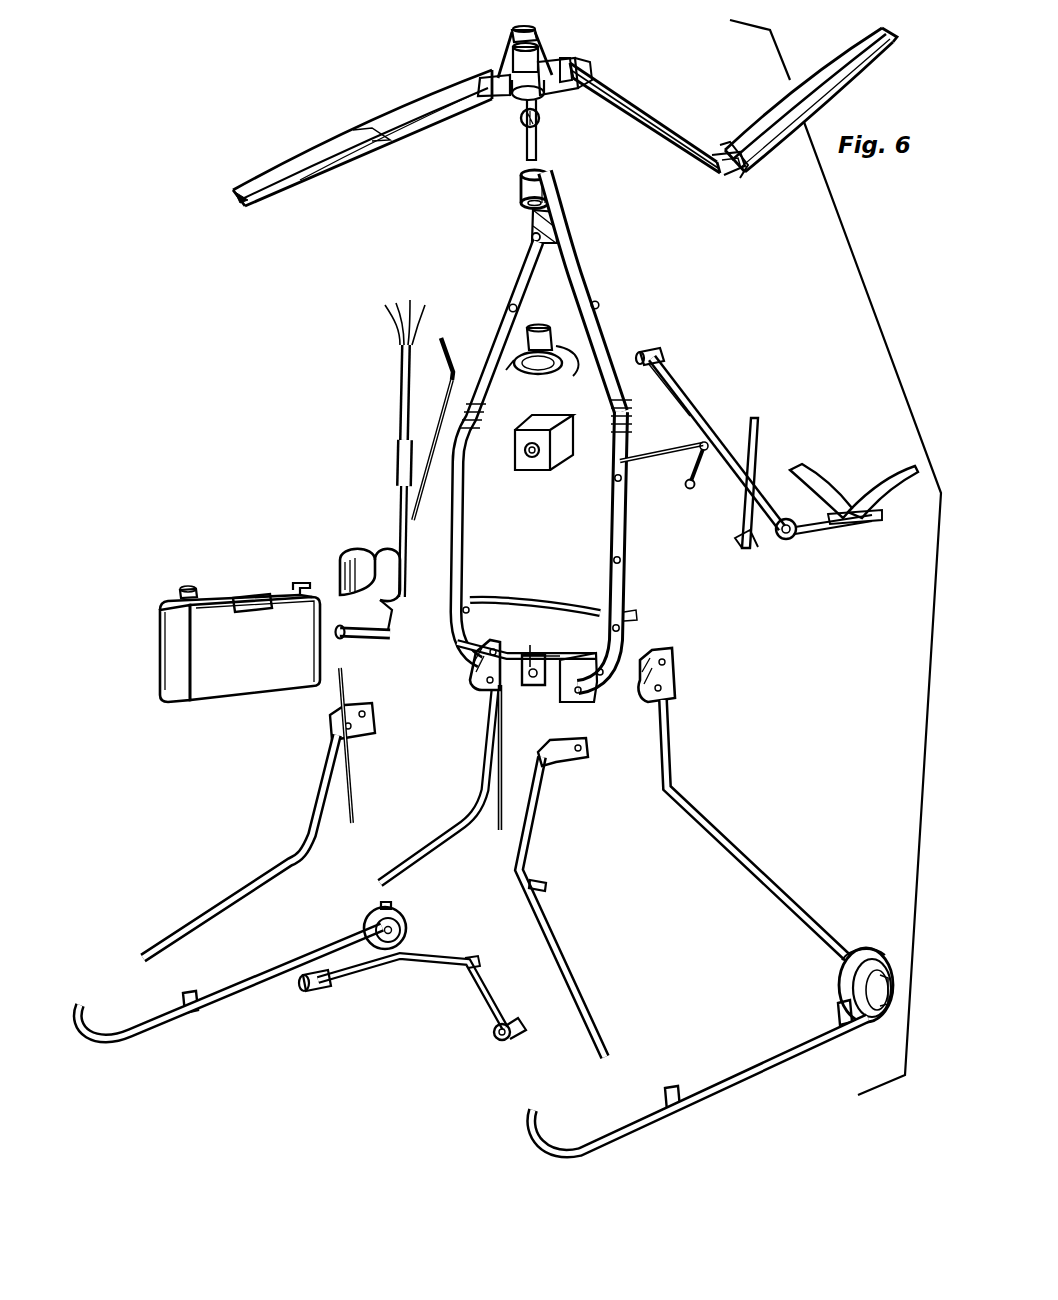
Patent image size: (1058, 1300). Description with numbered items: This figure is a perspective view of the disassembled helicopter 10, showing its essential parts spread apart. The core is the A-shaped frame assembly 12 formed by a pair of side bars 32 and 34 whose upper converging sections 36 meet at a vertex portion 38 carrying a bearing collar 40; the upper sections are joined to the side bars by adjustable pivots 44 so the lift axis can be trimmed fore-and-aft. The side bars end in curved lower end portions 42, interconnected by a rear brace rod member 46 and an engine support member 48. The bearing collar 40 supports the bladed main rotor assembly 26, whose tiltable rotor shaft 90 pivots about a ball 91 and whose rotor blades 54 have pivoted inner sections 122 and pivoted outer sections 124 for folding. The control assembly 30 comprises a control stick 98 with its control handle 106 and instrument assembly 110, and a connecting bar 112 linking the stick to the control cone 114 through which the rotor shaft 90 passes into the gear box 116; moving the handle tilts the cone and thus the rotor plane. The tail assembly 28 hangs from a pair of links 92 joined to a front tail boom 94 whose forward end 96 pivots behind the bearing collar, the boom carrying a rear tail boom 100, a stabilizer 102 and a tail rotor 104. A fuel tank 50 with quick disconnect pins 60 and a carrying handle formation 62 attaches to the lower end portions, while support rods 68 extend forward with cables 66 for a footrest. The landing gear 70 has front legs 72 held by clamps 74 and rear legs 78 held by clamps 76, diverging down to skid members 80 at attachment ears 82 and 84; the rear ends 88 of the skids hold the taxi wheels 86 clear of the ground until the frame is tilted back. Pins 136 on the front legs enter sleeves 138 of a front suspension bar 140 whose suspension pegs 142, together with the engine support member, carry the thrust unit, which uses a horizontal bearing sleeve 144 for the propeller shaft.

The helicopter 10 is at (152, 295).
The frame assembly 12 is at (566, 453).
The bladed main rotor assembly 26 is at (590, 40).
The tail assembly 28 is at (745, 386).
The control assembly 30 is at (376, 448).
The side bar 32 is at (470, 481).
The side bar 34 is at (620, 521).
The upper converging sections 36 is at (586, 266).
The vertex portion 38 is at (556, 190).
The bearing collar 40 is at (520, 192).
The curved lower end portions 42 is at (585, 691).
The adjustable pivots 44 is at (599, 301).
The rear brace rod member 46 is at (508, 606).
The engine support member 48 is at (520, 657).
The fuel tanks 50 is at (240, 651).
The rotor blades 54 is at (355, 128).
The quick disconnect pins 60 is at (257, 621).
The carrying handle formation 62 is at (240, 593).
The cables 66 is at (352, 773).
The support rods 68 is at (388, 659).
The landing gear 70 is at (487, 901).
The front legs 72 is at (258, 871).
The clamps 74 is at (380, 717).
The clamps 76 is at (660, 681).
The rear legs 78 is at (700, 816).
The skid members 80 is at (250, 996).
The attachment ears 82 is at (686, 1094).
The attachment ears 84 is at (836, 1011).
The taxi wheels 86 is at (855, 949).
The rear ends of skid members 88 is at (876, 957).
The rotor shaft 90 is at (525, 150).
The ball 91 is at (539, 121).
The links 92 is at (698, 479).
The front tail boom 94 is at (684, 396).
The forward end of tail boom 96 is at (652, 353).
The control stick 98 is at (401, 401).
The rear tail boom 100 is at (806, 541).
The stabilizer 102 is at (814, 491).
The tail rotor 104 is at (752, 447).
The control handle 106 is at (340, 639).
The instrument assembly 110 is at (362, 566).
The connecting bar 112 is at (442, 343).
The control cone 114 is at (555, 356).
The gear box 116 is at (562, 453).
The inner sections 122 is at (665, 107).
The outer sections 124 is at (822, 75).
The pins 136 is at (548, 886).
The sleeves 138 is at (506, 1041).
The front suspension bar 140 is at (446, 991).
The suspension pegs 142 is at (460, 961).
The horizontal bearing sleeve 144 is at (494, 691).